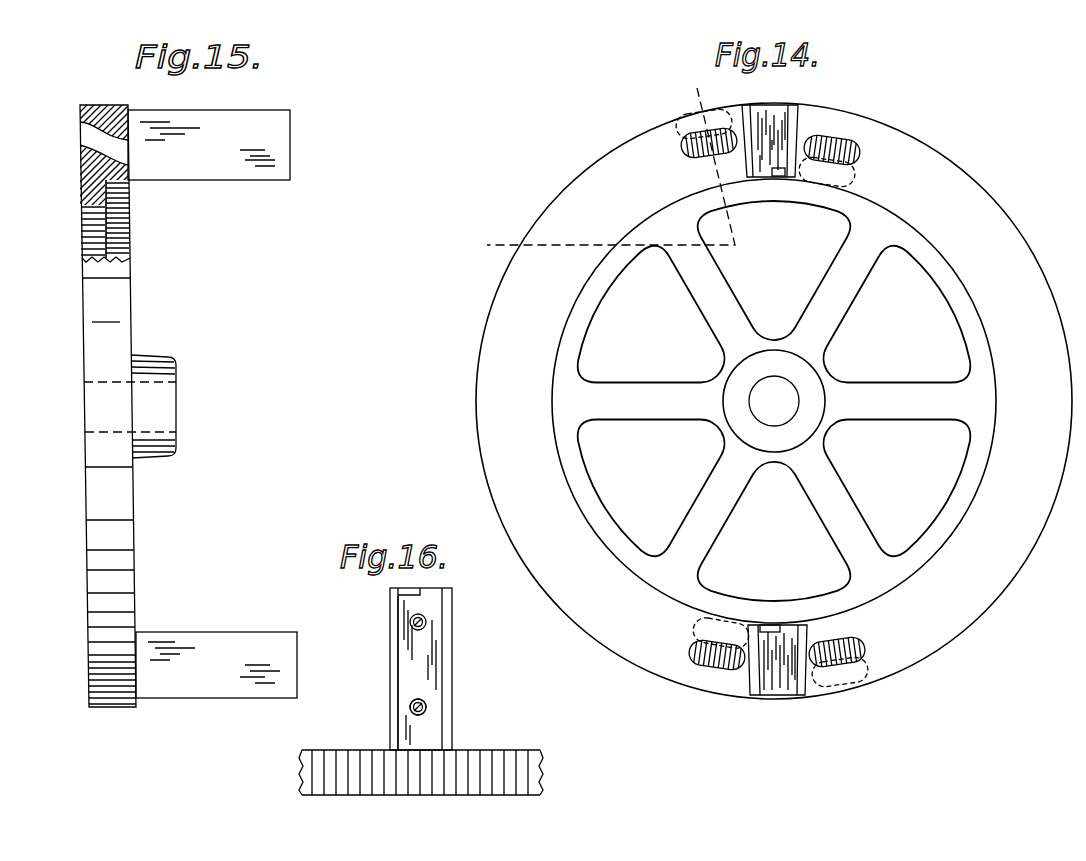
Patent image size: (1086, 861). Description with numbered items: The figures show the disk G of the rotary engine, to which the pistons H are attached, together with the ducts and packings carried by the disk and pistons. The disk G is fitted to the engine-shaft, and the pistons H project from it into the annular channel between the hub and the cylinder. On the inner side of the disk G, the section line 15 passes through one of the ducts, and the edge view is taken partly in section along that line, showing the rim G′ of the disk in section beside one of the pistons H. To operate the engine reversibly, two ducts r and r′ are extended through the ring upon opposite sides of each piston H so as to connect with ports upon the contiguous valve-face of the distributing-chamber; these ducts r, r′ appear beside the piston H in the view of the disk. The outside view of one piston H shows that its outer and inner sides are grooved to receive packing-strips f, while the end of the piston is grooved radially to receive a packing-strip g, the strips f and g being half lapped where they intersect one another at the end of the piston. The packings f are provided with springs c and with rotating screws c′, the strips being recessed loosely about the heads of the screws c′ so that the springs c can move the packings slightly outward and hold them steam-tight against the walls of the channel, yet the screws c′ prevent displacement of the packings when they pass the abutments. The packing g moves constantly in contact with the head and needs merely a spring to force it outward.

In FIG. 14, the disk G is at (774, 401).
In FIG. 15, the disk G is at (87, 573).
In FIG. 14, the wheel rim G′ is at (566, 308).
In FIG. 15, the wheel rim G′ is at (115, 177).
In FIG. 16, the wheel rim G′ is at (503, 752).
In FIG. 14, the piston H is at (790, 106).
In FIG. 15, the piston H is at (212, 404).
In FIG. 16, the piston H is at (454, 648).
In FIG. 14, the packing-strip g is at (772, 399).
In FIG. 16, the packing-strip g is at (409, 580).
In FIG. 14, the duct r is at (843, 140).
In FIG. 14, the duct r′ is at (682, 150).
In FIG. 15, the duct r′ is at (86, 140).
In FIG. 14, the section line 15 is at (598, 160).
In FIG. 16, the packing-strip f is at (409, 672).
In FIG. 16, the spring c is at (409, 708).
In FIG. 16, the retaining-screw c′ is at (427, 707).